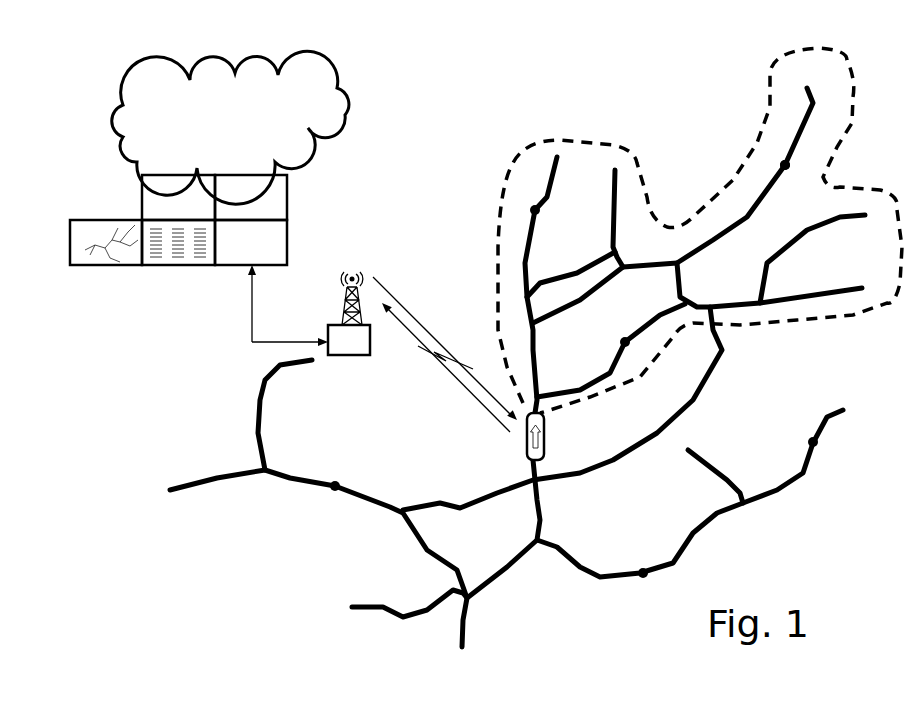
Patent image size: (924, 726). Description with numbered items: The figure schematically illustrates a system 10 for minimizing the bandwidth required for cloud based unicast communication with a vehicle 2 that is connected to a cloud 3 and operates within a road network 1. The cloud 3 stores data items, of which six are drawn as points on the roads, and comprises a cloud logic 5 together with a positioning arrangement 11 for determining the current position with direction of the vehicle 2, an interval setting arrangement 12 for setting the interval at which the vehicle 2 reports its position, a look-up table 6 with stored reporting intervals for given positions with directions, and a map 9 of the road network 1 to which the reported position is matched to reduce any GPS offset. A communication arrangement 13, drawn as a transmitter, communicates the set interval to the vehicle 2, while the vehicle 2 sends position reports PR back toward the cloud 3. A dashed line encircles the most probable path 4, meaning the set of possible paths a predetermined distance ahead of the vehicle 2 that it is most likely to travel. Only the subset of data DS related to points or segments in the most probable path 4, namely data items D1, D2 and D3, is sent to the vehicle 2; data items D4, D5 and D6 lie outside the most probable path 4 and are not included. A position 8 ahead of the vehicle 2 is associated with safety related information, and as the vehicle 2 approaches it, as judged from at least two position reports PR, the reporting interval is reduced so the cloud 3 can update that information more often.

The road network 1 is at (366, 534).
The vehicle 2 is at (527, 450).
The cloud 3 is at (300, 78).
The most probable path 4 is at (768, 101).
The cloud logic 5 is at (251, 242).
The look-up table 6 is at (195, 255).
The position 8 is at (790, 163).
The map 9 is at (132, 255).
The system 10 is at (331, 216).
The positioning arrangement 11 is at (178, 197).
The interval setting arrangement 12 is at (251, 197).
The communication arrangement 13 is at (348, 345).
The data item D1 is at (540, 207).
The data item D2 is at (780, 162).
The data item D3 is at (620, 340).
The data item D4 is at (340, 480).
The data item D5 is at (640, 567).
The data item D6 is at (810, 438).
The subset of data DS is at (417, 313).
The position report PR is at (470, 400).